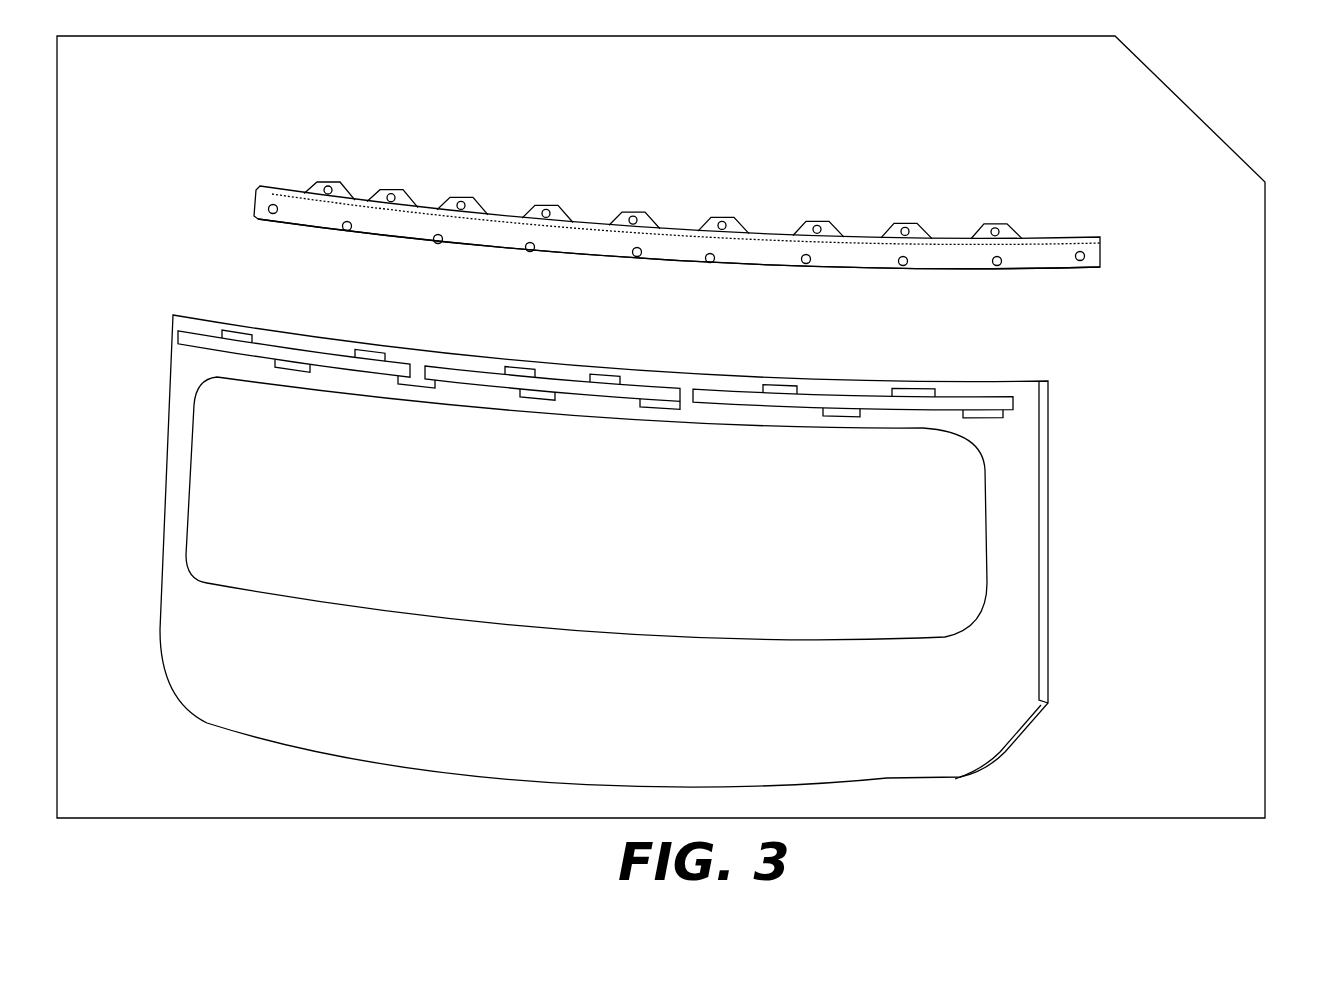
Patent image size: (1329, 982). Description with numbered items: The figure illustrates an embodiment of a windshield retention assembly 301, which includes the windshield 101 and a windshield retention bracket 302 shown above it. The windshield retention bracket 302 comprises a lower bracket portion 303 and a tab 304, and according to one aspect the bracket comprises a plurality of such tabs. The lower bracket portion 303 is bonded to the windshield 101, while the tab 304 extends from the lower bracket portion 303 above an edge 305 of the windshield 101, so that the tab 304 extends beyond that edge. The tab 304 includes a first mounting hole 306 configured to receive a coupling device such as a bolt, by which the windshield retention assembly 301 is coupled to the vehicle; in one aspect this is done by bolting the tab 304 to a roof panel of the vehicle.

The windshield retention assembly 301 is at (1200, 117).
The windshield retention bracket 302 is at (621, 193).
The lower bracket portion 303 is at (285, 223).
The tab 304 is at (459, 148).
The edge 305 is at (1018, 378).
The first mounting hole 306 is at (455, 203).
The windshield 101 is at (1042, 574).